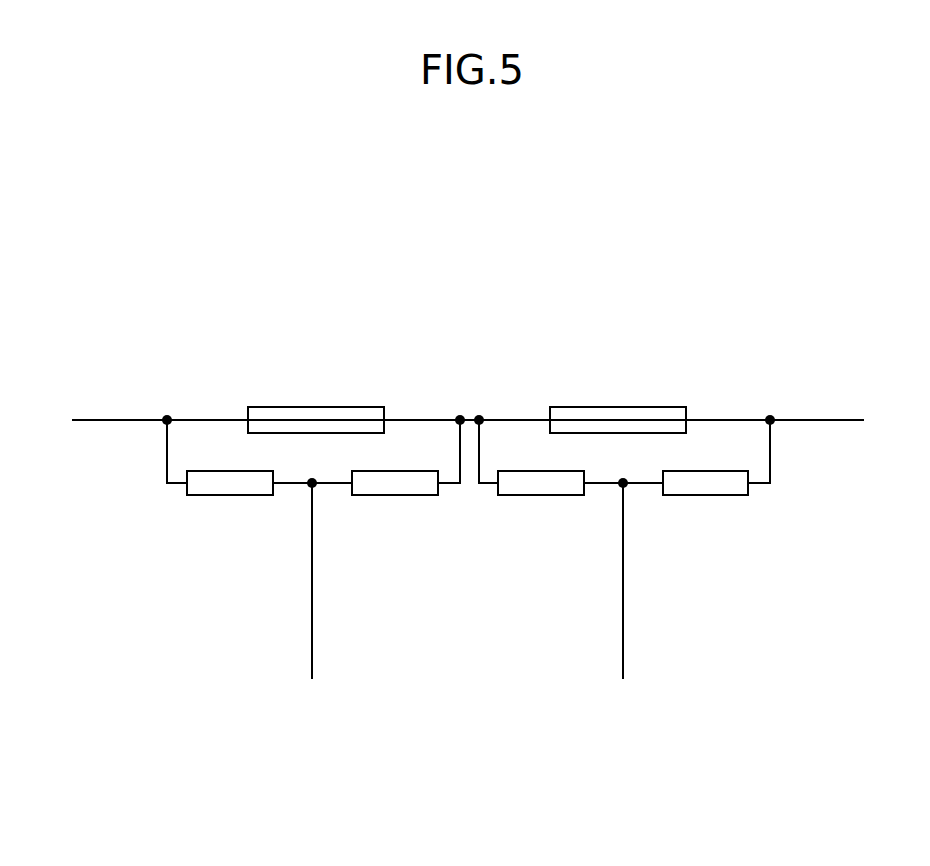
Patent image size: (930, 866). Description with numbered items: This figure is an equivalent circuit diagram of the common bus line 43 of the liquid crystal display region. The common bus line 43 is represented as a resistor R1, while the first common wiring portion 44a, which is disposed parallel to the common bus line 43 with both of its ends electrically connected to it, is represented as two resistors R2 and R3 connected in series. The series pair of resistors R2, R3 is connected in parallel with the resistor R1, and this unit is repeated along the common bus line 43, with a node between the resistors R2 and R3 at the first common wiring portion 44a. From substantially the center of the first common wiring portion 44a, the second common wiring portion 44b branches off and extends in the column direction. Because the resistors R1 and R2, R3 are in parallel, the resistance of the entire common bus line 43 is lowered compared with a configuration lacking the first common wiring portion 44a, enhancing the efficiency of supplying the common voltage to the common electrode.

The common bus line 43 is at (118, 413).
The resistor R1 is at (304, 406).
The resistor R2 is at (223, 496).
The resistor R3 is at (403, 496).
The first common wiring portion 44a is at (289, 486).
The second common wiring portion 44b is at (313, 628).